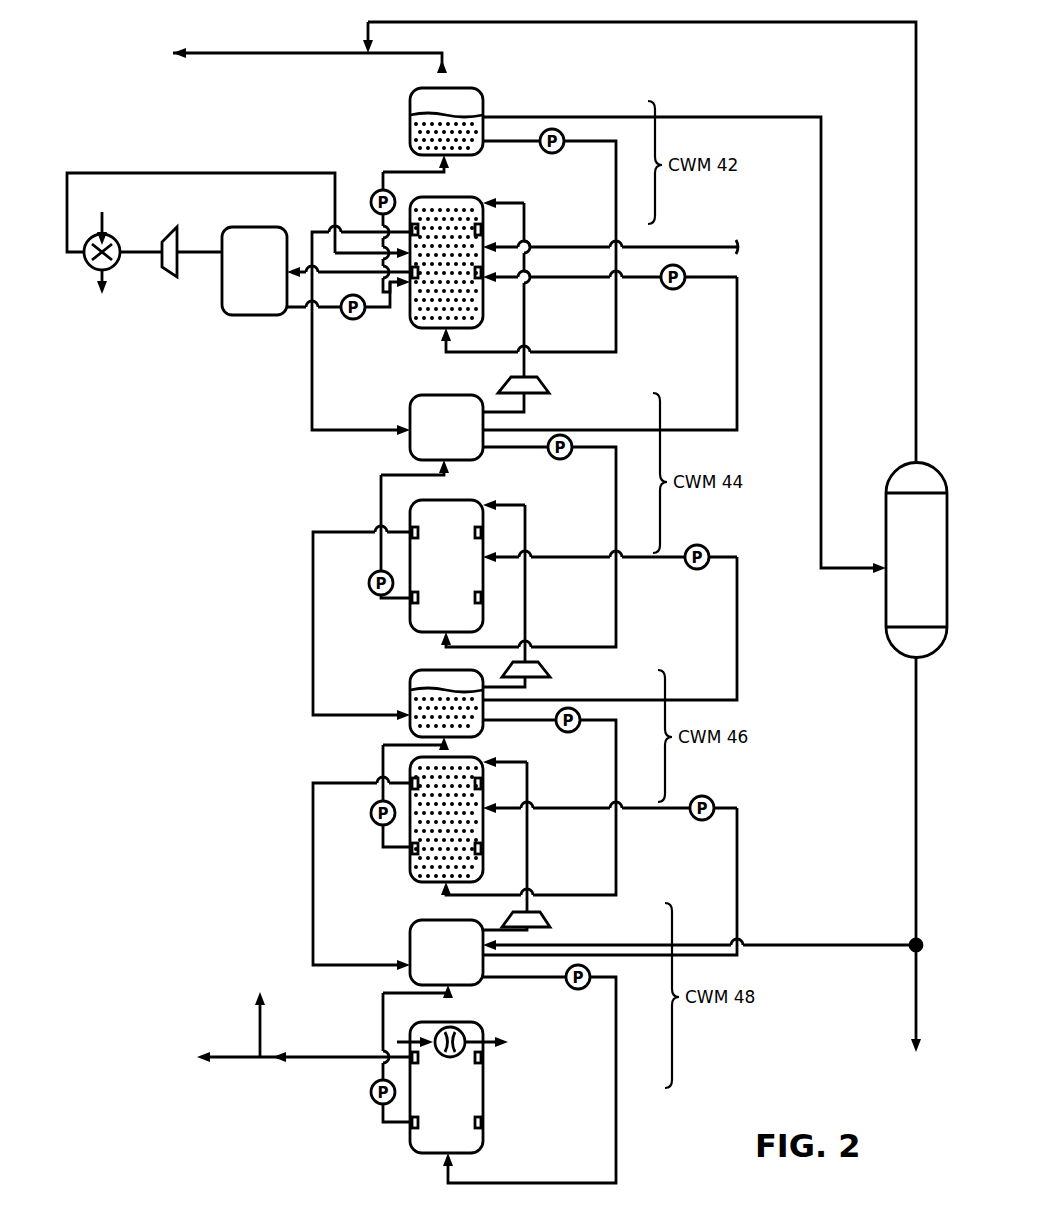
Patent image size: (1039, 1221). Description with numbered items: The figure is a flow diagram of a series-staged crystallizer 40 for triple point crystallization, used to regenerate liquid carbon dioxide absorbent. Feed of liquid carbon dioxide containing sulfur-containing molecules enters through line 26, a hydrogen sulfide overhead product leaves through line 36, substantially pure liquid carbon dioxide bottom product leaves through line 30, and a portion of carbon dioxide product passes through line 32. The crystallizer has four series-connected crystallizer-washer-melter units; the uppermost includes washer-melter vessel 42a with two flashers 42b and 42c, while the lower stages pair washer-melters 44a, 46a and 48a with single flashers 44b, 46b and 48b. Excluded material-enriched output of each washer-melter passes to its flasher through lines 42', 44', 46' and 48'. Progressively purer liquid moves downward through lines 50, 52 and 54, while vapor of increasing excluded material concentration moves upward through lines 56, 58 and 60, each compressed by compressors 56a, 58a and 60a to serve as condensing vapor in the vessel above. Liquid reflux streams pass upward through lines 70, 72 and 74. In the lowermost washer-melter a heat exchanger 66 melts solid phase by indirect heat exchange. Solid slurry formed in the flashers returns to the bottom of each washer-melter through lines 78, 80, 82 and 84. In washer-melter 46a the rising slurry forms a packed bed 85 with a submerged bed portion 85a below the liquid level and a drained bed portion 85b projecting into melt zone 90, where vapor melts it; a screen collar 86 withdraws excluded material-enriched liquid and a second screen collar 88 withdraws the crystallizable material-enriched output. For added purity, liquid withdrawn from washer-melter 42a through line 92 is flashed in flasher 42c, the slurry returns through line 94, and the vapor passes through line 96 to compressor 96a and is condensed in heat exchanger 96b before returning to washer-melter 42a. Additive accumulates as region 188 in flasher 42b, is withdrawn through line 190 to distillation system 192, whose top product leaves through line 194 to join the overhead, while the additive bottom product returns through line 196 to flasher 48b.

The feed line 26 is at (684, 245).
The bottom product line 30 is at (300, 1062).
The carbon dioxide product line 32 is at (266, 1032).
The overhead product line 36 is at (228, 56).
The series-staged crystallizer 40 is at (250, 498).
The washer-melter vessel 42a is at (410, 328).
The flasher vessel 42b is at (412, 148).
The flasher vessel 42c is at (224, 312).
The excluded material supply line 42' is at (394, 220).
The washer-melter vessel 44a is at (410, 632).
The flasher vessel 44b is at (394, 462).
The excluded material supply line 44' is at (389, 529).
The washer-melter vessel 46a is at (412, 884).
The flasher vessel 46b is at (400, 740).
The excluded material supply line 46' is at (387, 792).
The washer-melter vessel 48a is at (412, 1152).
The flasher vessel 48b is at (412, 982).
The excluded material supply line 48' is at (391, 1061).
The liquid transfer line 50 is at (308, 360).
The liquid transfer line 52 is at (312, 608).
The liquid transfer line 54 is at (312, 898).
The vapor line 56 is at (532, 868).
The compressor 56a is at (552, 926).
The vapor line 58 is at (530, 606).
The compressor 58a is at (552, 676).
The vapor line 60 is at (528, 322).
The compressor 60a is at (552, 388).
The heat exchanger 66 is at (462, 1030).
The liquid reflux line 70 is at (740, 882).
The liquid reflux line 72 is at (740, 606).
The liquid reflux line 74 is at (740, 372).
The slurry return line 78 is at (618, 320).
The slurry line 80 is at (620, 606).
The slurry line 82 is at (620, 882).
The slurry line 84 is at (620, 1128).
The packed bed 85 is at (480, 834).
The submerged bed portion 85a is at (432, 830).
The drained bed portion 85b is at (452, 772).
The screen collar 86 is at (481, 850).
The second screen collar 88 is at (486, 788).
The melt zone 90 is at (427, 770).
The liquid withdrawal line 92 is at (330, 273).
The slurry return line 94 is at (316, 318).
The evaporation vapor line 96 is at (203, 250).
The compressor 96a is at (168, 238).
The heat exchanger 96b is at (114, 268).
The region of concentrated additive 188 is at (447, 118).
The additive withdrawal line 190 is at (718, 114).
The distillation system 192 is at (896, 607).
The top product line 194 is at (914, 374).
The additive return line 196 is at (818, 942).